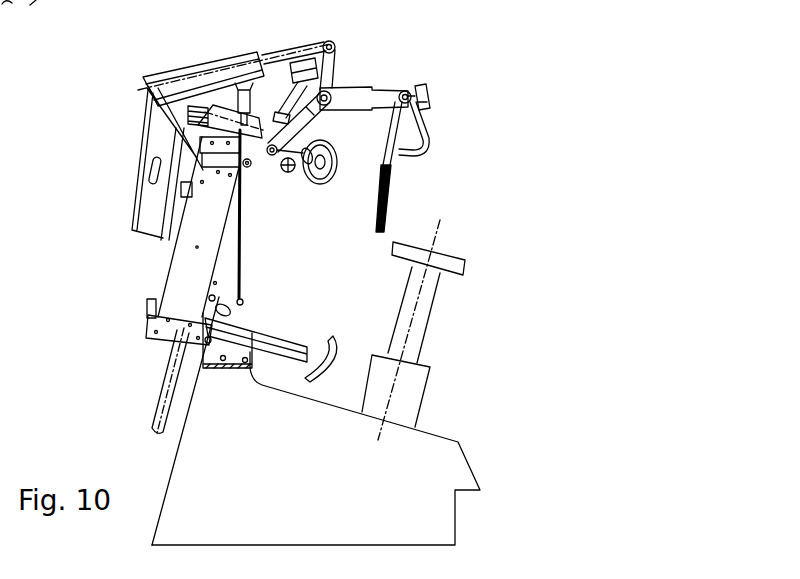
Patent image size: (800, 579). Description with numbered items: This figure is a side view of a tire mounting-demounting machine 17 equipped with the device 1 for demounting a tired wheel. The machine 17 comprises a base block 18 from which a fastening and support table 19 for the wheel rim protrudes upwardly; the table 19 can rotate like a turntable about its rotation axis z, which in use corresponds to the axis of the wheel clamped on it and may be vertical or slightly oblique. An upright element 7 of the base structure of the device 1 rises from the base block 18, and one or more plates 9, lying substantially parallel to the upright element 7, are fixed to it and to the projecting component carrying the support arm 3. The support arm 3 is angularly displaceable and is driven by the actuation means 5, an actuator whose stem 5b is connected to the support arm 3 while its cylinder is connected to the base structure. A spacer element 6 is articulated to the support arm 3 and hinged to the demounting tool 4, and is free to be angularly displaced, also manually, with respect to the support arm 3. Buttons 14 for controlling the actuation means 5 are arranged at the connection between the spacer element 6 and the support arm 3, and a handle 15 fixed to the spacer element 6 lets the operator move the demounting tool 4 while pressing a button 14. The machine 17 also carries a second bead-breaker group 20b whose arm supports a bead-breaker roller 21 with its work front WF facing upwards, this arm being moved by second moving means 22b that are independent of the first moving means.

The device 1 is at (355, 80).
The support arm 3 is at (372, 84).
The demounting tool 4 is at (387, 208).
The actuation means 5 is at (227, 68).
The stem 5b is at (291, 58).
The spacer element 6 is at (390, 127).
The upright element 7 is at (230, 262).
The plate 9 is at (240, 198).
The buttons 14 is at (430, 91).
The handle 15 is at (426, 137).
The tire mounting-demounting machine 17 is at (130, 260).
The base block 18 is at (188, 468).
The fastening and support table 19 is at (442, 255).
The second bead-breaker group 20b is at (243, 313).
The bead-breaker roller 21 is at (336, 161).
The second moving means 22b is at (168, 373).
The work front WF is at (330, 184).
The rotation axis z is at (409, 324).